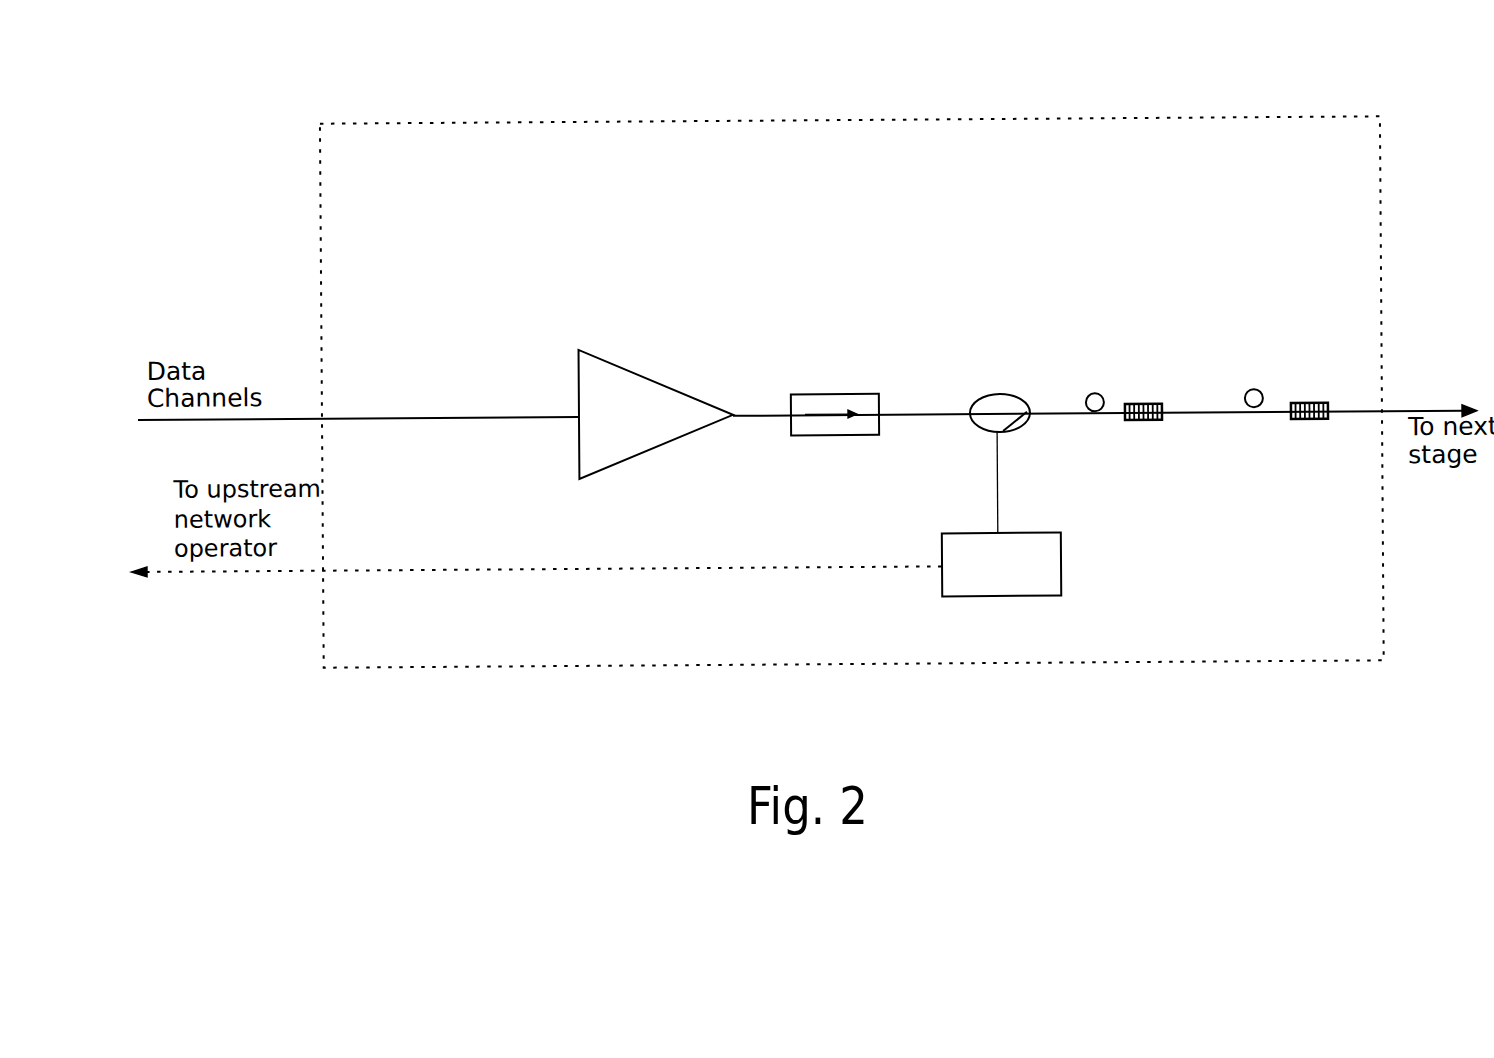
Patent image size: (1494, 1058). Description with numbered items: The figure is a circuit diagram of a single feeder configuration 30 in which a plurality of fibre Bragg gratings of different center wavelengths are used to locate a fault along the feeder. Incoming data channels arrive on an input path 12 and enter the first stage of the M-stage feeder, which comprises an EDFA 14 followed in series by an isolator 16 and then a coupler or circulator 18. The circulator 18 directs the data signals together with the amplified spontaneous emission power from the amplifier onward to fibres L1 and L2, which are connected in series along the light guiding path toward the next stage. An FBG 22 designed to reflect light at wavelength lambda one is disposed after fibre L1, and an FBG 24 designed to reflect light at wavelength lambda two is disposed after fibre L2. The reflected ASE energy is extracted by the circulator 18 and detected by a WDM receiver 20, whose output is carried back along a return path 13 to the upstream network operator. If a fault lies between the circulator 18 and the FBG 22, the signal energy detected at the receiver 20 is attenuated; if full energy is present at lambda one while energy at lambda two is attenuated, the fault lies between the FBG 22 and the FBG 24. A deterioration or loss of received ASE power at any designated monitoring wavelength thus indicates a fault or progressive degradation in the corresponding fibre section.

The input optical fiber carrying data channels 12 is at (352, 420).
The return signal path to upstream network operator 13 is at (558, 572).
The EDFA 14 is at (607, 361).
The isolator 16 is at (832, 399).
The coupler or circulator 18 is at (1002, 401).
The receiver 20 is at (1035, 539).
The FBG 22 is at (1162, 410).
The FBG 24 is at (1328, 409).
The single feeder configuration 30 is at (504, 125).
The fibre L1 is at (1098, 388).
The fibre L2 is at (1253, 383).